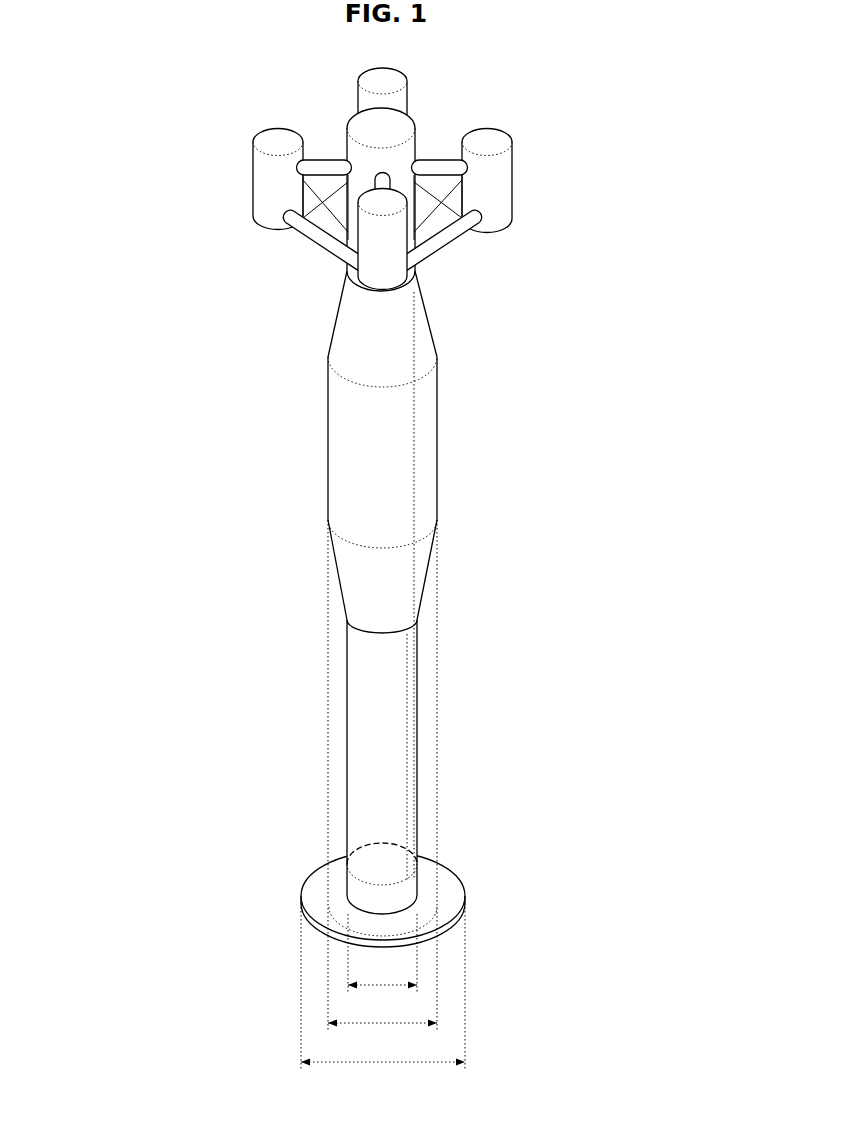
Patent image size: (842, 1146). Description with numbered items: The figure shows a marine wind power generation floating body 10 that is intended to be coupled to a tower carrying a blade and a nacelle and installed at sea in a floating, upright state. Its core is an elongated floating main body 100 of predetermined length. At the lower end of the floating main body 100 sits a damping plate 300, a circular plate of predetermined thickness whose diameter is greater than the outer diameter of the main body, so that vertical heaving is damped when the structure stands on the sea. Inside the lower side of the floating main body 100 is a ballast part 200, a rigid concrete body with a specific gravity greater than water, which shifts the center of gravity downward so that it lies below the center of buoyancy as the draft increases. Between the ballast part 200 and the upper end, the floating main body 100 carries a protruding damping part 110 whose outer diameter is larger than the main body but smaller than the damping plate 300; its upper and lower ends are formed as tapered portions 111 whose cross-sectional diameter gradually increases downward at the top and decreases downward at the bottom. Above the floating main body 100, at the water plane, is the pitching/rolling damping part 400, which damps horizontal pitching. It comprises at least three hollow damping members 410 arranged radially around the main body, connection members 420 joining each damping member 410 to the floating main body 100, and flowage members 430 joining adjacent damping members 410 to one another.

The marine wind power generation floating body 10 is at (27, 58).
The floating main body 100 is at (419, 733).
The protruding damping part 110 is at (432, 474).
The tapered portion 111 is at (430, 336).
The ballast part 200 is at (366, 863).
The damping plate 300 is at (449, 882).
The pitching/rolling damping part 400 is at (460, 179).
The damping member 410 is at (504, 177).
The connection member 420 is at (429, 160).
The flowage member 430 is at (456, 244).